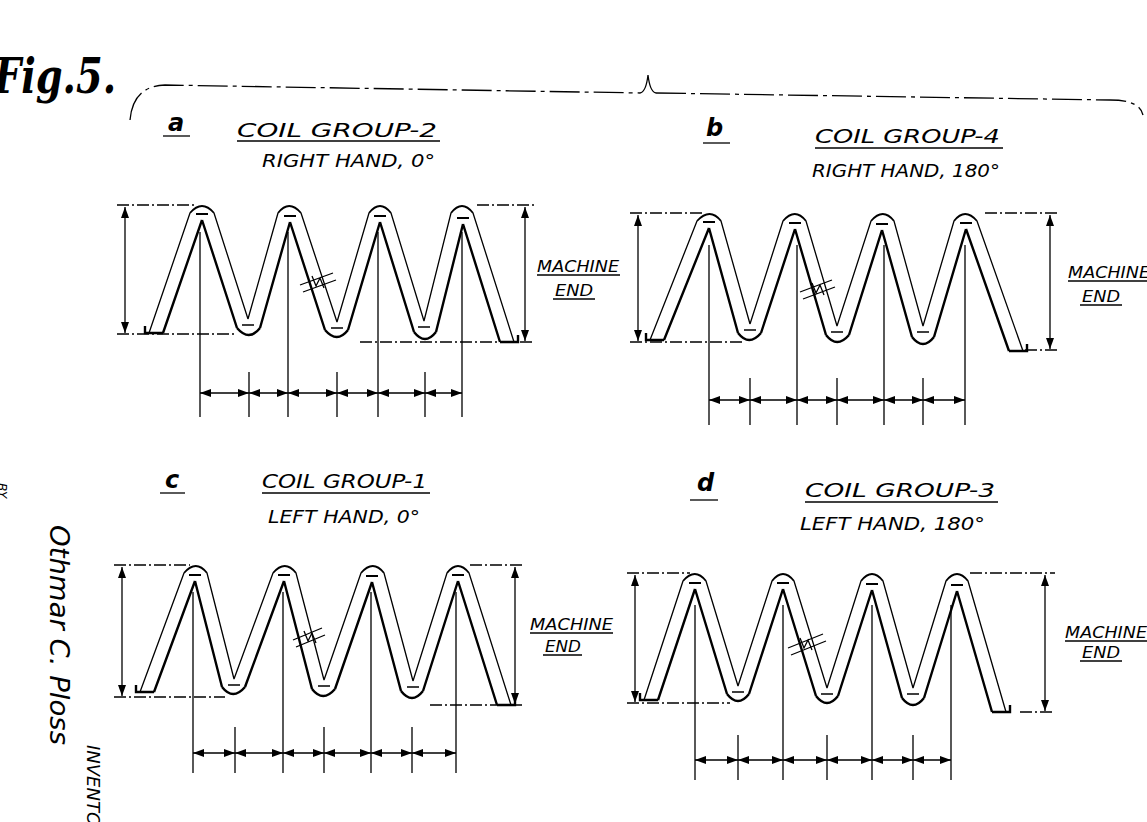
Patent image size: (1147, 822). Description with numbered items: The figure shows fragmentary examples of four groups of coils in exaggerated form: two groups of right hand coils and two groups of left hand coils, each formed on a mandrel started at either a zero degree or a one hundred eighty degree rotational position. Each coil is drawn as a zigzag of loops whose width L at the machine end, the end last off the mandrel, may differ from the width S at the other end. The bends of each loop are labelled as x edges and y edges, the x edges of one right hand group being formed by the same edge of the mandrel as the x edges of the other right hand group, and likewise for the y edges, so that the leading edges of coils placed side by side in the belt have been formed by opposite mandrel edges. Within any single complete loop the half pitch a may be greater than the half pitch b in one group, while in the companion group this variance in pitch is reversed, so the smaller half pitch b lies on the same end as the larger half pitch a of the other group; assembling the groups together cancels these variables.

The x edges x is at (581, 451).
The y edges y is at (596, 461).
The half pitch a is at (579, 565).
The half pitch b is at (579, 565).
The width of the coil at one end S is at (429, 454).
The width of the coil at the machine end L is at (709, 458).